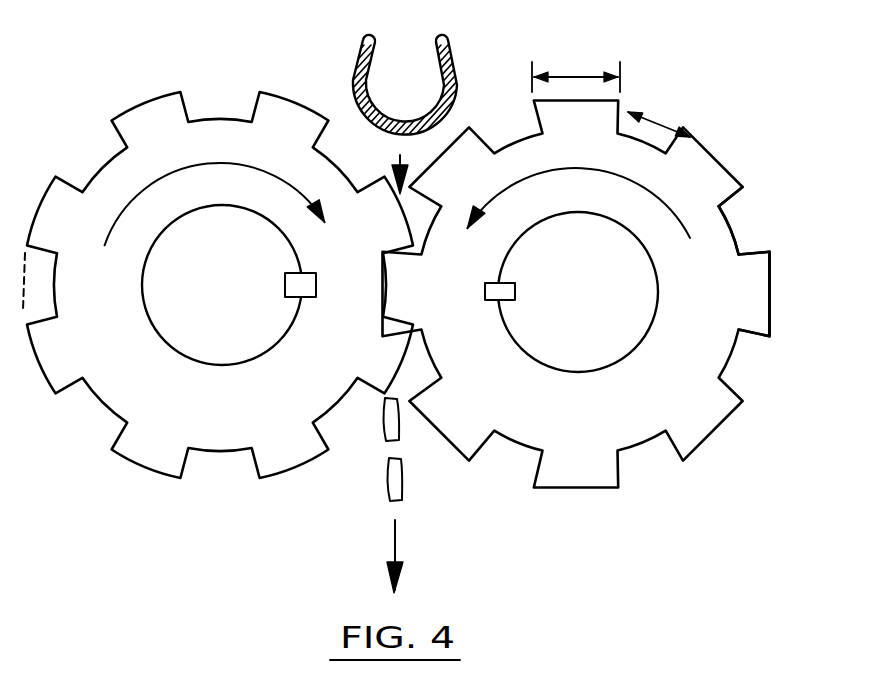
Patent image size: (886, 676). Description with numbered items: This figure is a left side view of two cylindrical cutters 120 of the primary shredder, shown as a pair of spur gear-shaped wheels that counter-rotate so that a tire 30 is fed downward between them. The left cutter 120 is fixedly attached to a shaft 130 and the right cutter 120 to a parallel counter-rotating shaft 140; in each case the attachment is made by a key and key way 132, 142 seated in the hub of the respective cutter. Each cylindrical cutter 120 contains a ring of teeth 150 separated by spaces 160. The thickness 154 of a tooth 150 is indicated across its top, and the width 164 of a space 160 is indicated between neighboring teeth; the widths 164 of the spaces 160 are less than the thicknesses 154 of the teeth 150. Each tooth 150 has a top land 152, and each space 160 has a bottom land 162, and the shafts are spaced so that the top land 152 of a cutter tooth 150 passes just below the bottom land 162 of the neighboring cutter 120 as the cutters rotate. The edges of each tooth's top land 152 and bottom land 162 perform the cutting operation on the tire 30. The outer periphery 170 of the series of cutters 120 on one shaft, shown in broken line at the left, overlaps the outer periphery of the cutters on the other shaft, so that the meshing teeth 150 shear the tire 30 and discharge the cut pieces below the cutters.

The tire 30 is at (460, 46).
The cylindrical cutter 120 is at (160, 93).
The shaft 130 is at (150, 330).
The key and key way 132 is at (297, 300).
The shaft 140 is at (603, 372).
The key and key way 142 is at (497, 300).
The tooth 150 is at (777, 303).
The top land 152 is at (777, 276).
The thickness 154 is at (572, 66).
The space 160 is at (737, 248).
The bottom land 162 is at (722, 222).
The width 164 is at (646, 116).
The outer periphery 170 is at (25, 290).